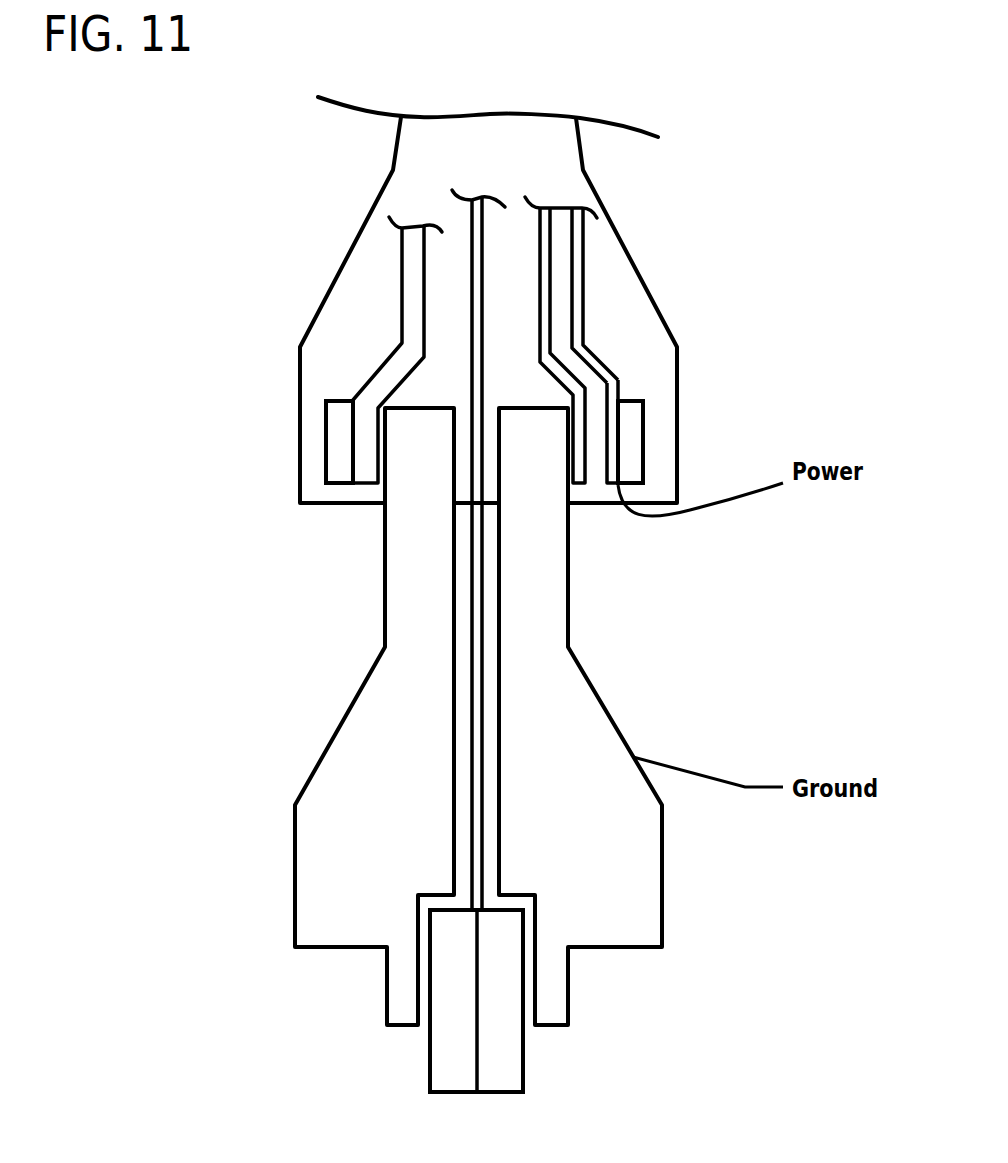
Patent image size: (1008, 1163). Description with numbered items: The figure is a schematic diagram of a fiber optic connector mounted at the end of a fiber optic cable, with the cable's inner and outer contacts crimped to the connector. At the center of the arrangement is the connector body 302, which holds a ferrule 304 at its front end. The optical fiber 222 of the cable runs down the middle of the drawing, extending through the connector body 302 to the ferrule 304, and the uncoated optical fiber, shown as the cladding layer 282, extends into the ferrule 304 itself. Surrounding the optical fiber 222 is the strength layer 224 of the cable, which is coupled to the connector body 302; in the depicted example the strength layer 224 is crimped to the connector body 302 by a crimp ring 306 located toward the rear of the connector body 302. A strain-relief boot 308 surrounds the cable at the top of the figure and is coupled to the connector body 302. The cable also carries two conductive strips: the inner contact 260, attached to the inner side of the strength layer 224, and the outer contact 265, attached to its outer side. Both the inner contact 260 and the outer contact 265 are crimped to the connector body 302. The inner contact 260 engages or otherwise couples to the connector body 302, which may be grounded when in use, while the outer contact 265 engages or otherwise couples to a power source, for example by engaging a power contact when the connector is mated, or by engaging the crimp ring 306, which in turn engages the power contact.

The strain-relief boot 308 is at (343, 263).
The connector body 302 is at (318, 763).
The crimp ring 306 is at (323, 448).
The optical fiber 222 is at (472, 642).
The strength layer 224 is at (579, 485).
The outer contact 265 is at (587, 322).
The inner contact 260 is at (593, 485).
The ferrule 304 is at (427, 1057).
The cladding layer 282 is at (478, 1055).